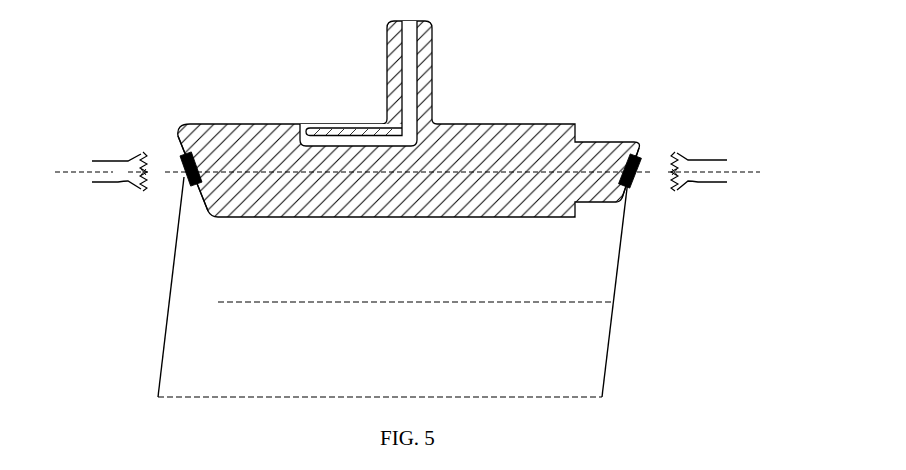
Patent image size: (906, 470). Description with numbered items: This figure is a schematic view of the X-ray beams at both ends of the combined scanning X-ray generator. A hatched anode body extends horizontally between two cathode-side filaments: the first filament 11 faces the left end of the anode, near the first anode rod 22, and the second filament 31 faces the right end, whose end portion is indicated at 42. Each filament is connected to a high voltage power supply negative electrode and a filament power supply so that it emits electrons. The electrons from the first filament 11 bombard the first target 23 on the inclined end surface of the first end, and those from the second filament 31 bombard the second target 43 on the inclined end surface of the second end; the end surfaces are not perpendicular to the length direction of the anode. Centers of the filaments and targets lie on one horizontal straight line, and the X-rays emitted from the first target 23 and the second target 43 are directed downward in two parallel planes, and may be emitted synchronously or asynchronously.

The first filament 11 is at (120, 182).
The first anode rod 22 is at (182, 140).
The first target 23 is at (185, 182).
The second filament 31 is at (697, 181).
The second inclined end face of light guide body 42 is at (645, 147).
The second target 43 is at (633, 186).